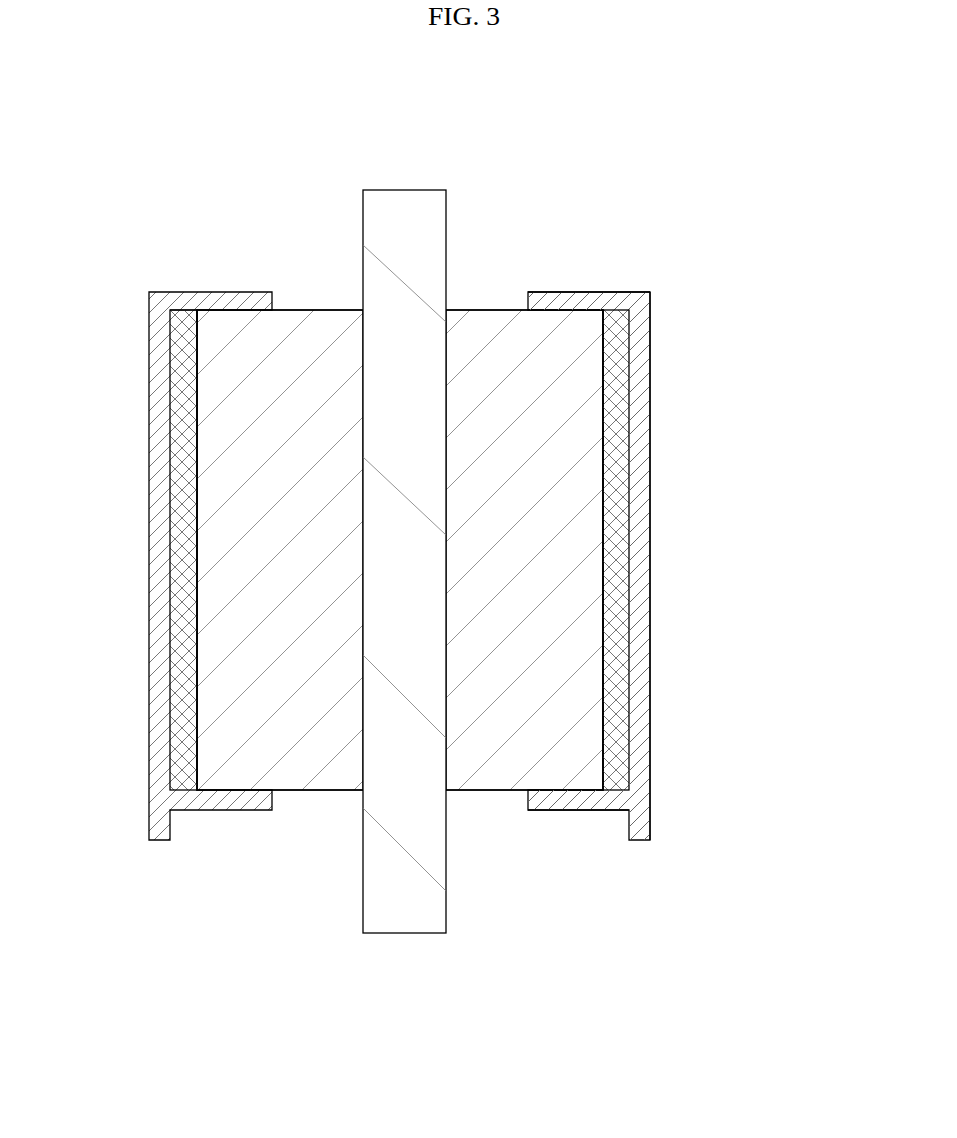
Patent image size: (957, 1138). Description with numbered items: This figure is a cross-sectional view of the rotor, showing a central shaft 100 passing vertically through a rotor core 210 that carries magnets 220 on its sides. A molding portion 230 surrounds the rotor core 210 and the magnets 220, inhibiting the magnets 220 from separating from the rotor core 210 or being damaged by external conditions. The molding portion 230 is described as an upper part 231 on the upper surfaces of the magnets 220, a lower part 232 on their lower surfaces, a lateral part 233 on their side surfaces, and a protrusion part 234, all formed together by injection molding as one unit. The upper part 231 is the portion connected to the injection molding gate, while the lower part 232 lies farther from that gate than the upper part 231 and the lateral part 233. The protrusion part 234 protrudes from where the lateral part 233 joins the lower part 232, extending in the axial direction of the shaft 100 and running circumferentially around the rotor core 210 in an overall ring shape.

The shaft 100 is at (425, 157).
The rotor core 210 is at (240, 437).
The magnets 220 is at (177, 550).
The molding portion 230 is at (691, 557).
The upper part 231 is at (612, 292).
The lower part 232 is at (652, 792).
The lateral part 233 is at (640, 563).
The protrusion part 234 is at (797, 432).